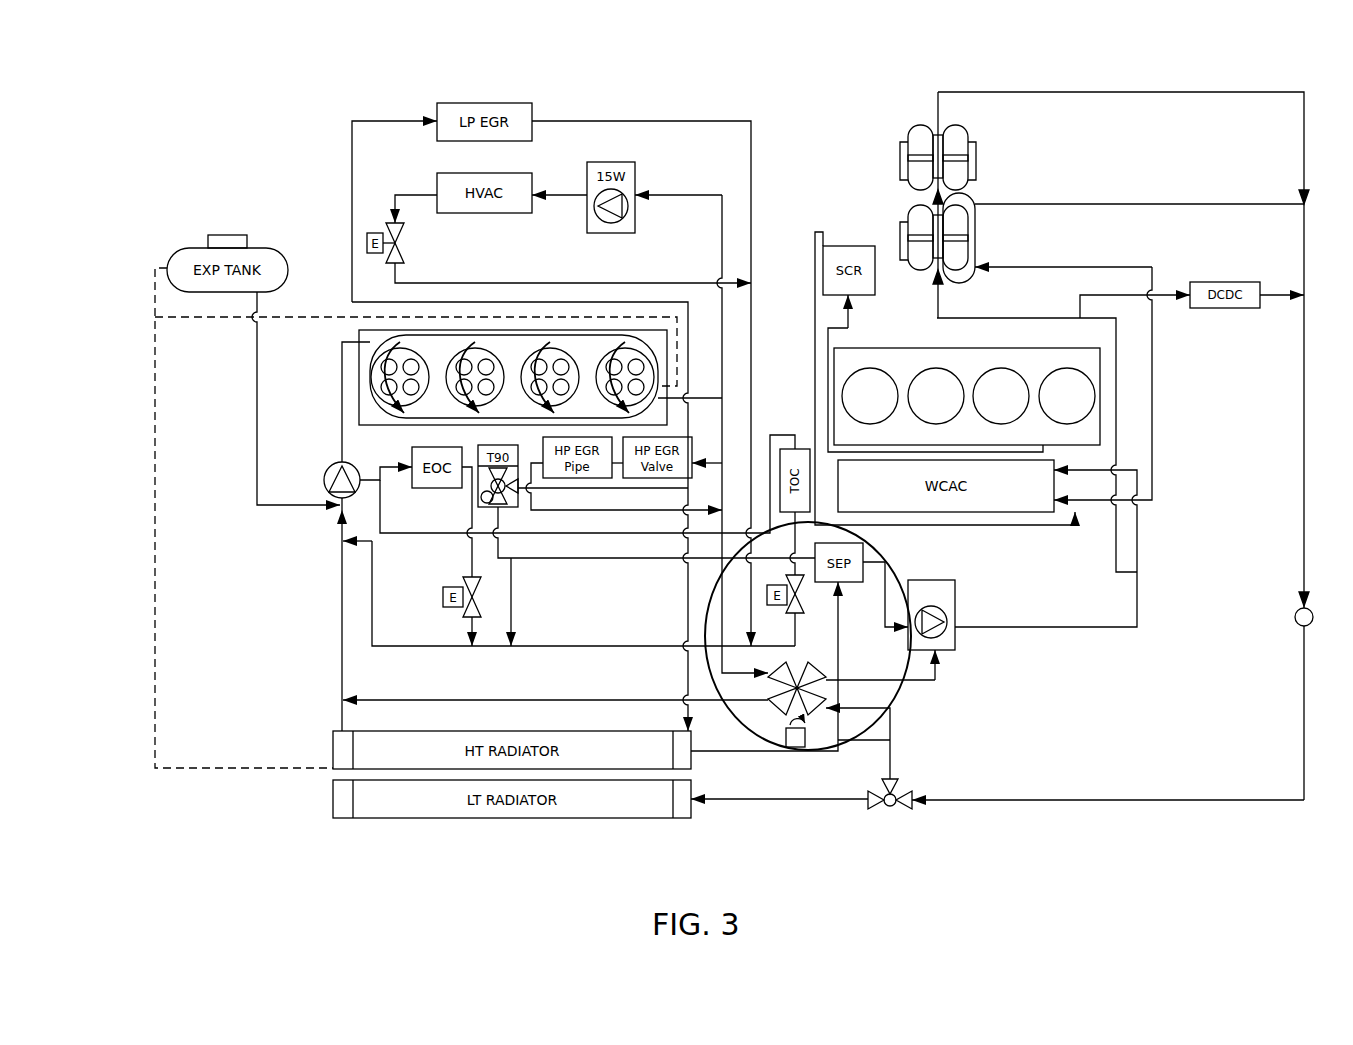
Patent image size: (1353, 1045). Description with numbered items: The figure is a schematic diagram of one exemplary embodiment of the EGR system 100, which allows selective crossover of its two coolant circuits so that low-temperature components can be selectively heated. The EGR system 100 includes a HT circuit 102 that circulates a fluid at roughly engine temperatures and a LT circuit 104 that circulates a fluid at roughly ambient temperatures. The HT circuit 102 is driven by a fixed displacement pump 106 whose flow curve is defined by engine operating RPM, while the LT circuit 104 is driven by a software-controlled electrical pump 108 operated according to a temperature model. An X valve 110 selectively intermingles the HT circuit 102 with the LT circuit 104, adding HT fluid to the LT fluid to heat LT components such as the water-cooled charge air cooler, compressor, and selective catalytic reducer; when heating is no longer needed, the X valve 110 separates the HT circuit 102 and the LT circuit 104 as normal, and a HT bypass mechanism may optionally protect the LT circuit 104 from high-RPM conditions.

The EGR system 100 is at (1122, 60).
The HT circuit 102 is at (800, 637).
The LT circuit 104 is at (852, 725).
The fixed displacement pump 106 is at (325, 520).
The electrical pump 108 is at (959, 657).
The X valve 110 is at (812, 714).